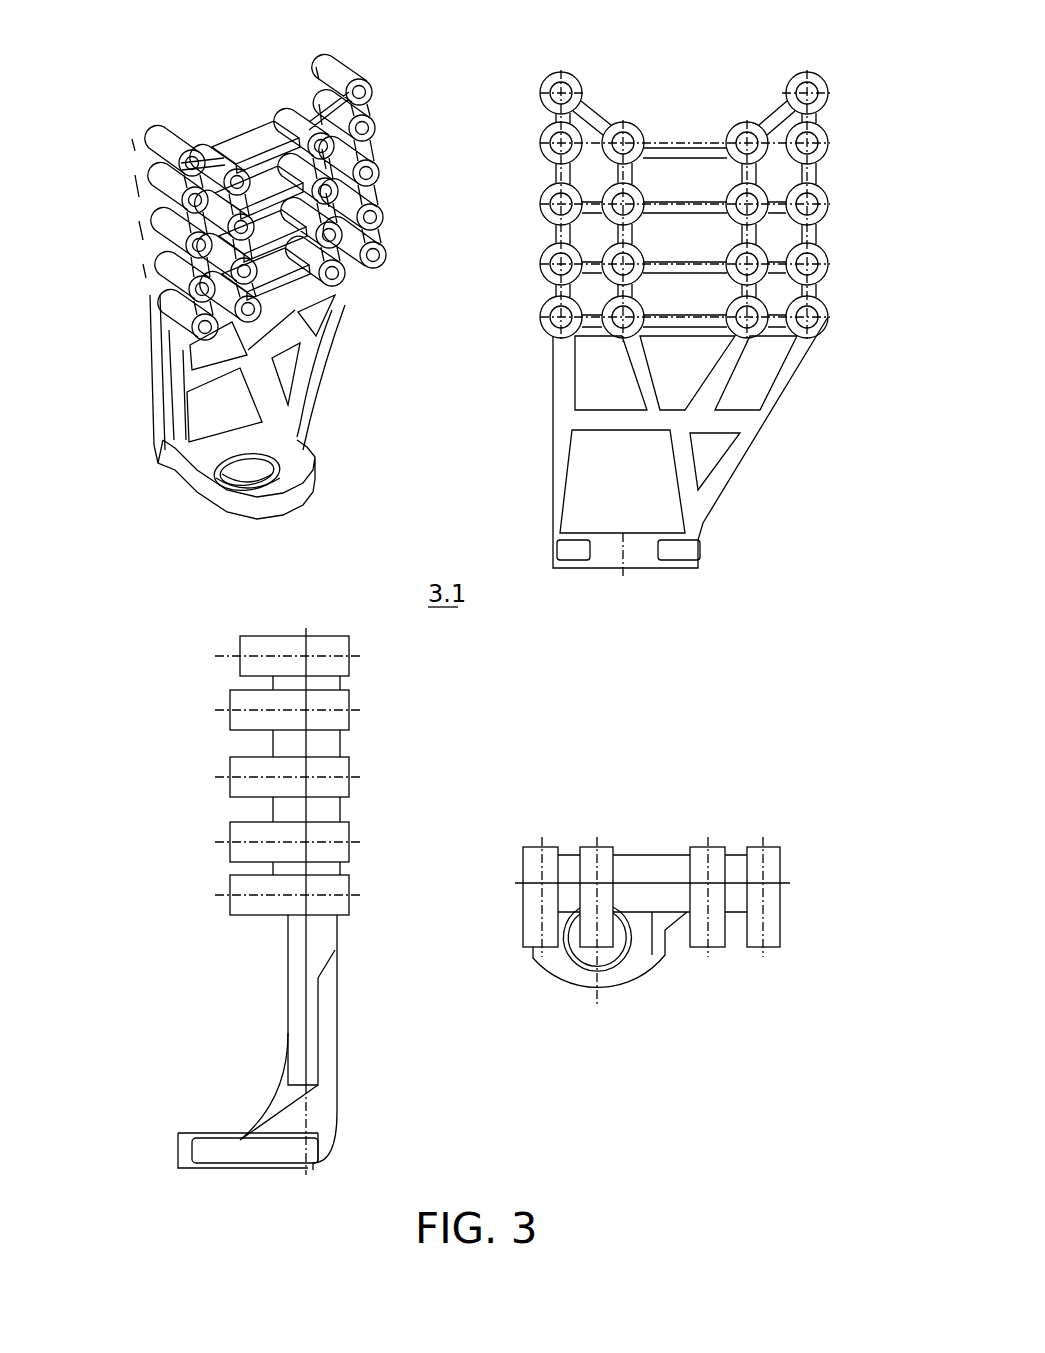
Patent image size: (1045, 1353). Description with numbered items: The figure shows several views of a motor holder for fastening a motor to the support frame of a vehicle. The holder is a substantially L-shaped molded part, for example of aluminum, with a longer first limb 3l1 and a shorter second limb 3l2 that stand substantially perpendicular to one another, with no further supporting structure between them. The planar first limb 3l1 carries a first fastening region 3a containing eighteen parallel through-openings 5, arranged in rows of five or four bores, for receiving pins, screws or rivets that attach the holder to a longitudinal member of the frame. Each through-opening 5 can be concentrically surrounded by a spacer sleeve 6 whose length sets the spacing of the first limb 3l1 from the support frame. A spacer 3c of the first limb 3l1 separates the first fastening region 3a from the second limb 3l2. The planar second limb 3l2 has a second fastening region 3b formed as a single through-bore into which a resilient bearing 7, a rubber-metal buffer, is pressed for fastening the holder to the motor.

The first fastening region 3a is at (116, 203).
The second fastening region 3b is at (266, 476).
The spacer 3c is at (290, 385).
The first limb 3l1 is at (165, 357).
The second limb 3l2 is at (235, 520).
The through-openings 5 is at (366, 285).
The spacer sleeves 6 is at (390, 185).
The resilient bearing 7 is at (210, 481).